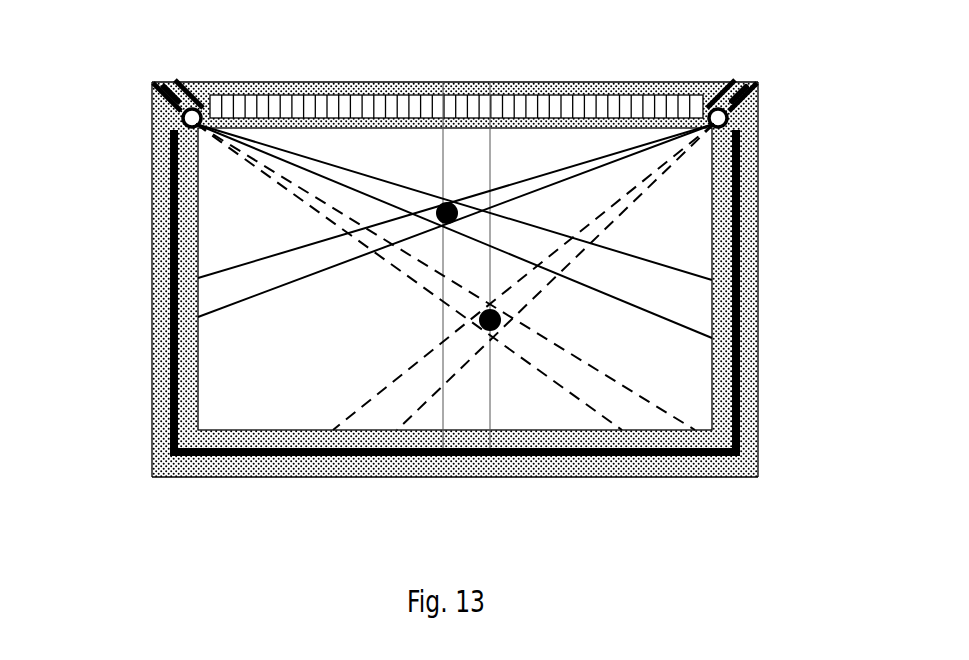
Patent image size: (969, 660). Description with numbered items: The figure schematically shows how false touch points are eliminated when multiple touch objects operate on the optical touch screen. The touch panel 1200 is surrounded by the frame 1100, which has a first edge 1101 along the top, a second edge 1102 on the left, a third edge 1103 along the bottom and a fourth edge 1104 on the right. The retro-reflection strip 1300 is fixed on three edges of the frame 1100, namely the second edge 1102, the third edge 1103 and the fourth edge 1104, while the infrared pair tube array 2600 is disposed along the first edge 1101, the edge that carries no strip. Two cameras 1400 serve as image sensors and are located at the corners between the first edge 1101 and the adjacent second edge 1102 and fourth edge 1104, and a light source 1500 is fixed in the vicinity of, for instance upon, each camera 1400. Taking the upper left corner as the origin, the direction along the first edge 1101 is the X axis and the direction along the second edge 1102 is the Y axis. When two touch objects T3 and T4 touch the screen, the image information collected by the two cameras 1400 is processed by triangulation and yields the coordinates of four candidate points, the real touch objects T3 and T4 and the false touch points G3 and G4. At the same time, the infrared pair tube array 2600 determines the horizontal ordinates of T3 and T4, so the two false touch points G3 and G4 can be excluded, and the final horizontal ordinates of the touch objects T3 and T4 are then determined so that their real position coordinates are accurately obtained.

The frame 1100 is at (152, 478).
The first edge 1101 is at (452, 82).
The second edge 1102 is at (152, 282).
The third edge 1103 is at (463, 478).
The fourth edge 1104 is at (758, 285).
The touch panel 1200 is at (617, 418).
The retro-reflection strip 1300 is at (736, 378).
The camera 1400 is at (170, 82).
The light source 1500 is at (152, 99).
The infrared pair tube array 2600 is at (498, 95).
The touch object T3 is at (447, 203).
The touch object T4 is at (493, 331).
The false touch point G3 is at (362, 233).
The false touch point G4 is at (562, 255).